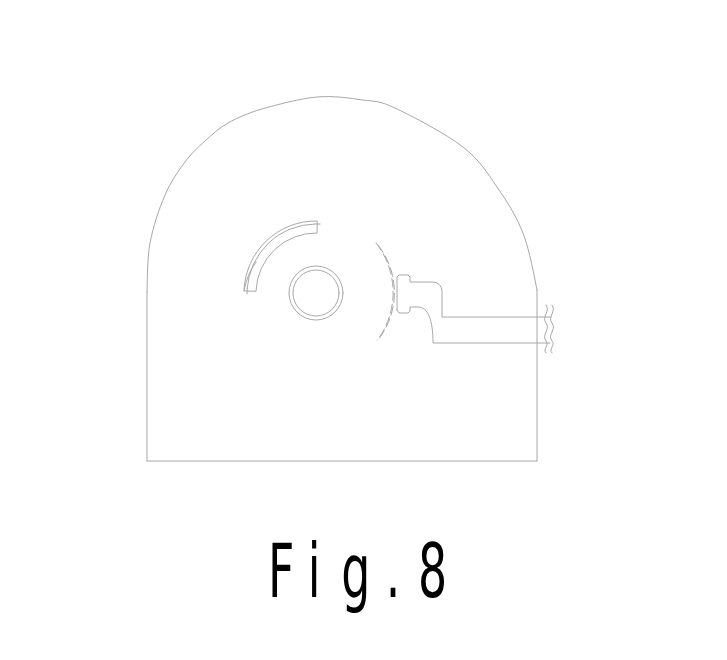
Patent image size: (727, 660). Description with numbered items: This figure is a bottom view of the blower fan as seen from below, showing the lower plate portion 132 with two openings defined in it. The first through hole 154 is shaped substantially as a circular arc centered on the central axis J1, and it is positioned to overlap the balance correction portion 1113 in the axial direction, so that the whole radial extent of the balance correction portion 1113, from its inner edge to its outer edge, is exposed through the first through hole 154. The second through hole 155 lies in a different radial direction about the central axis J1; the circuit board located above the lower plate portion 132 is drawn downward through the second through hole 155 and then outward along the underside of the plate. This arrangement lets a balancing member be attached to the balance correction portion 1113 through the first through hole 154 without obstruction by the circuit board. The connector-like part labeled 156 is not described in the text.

The lower plate portion 132 is at (395, 108).
The central axis J1 is at (330, 270).
The balance correction portion 1113 is at (289, 231).
The first through hole 154 is at (258, 250).
The upper pipe connector 156 is at (424, 292).
The second through hole 155 is at (405, 313).